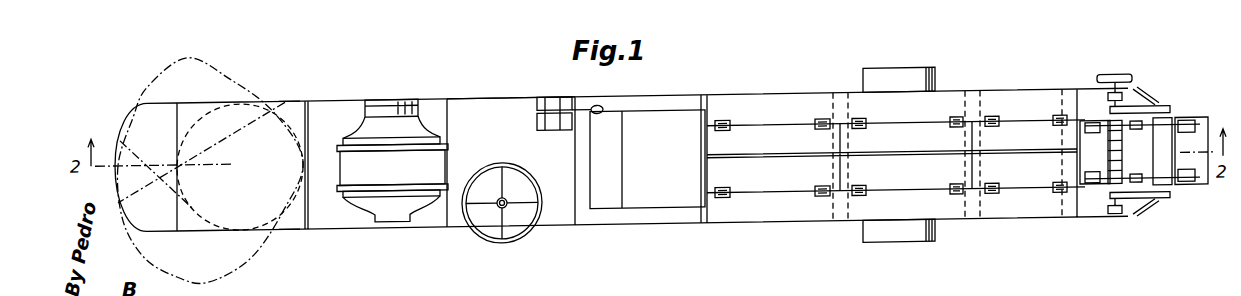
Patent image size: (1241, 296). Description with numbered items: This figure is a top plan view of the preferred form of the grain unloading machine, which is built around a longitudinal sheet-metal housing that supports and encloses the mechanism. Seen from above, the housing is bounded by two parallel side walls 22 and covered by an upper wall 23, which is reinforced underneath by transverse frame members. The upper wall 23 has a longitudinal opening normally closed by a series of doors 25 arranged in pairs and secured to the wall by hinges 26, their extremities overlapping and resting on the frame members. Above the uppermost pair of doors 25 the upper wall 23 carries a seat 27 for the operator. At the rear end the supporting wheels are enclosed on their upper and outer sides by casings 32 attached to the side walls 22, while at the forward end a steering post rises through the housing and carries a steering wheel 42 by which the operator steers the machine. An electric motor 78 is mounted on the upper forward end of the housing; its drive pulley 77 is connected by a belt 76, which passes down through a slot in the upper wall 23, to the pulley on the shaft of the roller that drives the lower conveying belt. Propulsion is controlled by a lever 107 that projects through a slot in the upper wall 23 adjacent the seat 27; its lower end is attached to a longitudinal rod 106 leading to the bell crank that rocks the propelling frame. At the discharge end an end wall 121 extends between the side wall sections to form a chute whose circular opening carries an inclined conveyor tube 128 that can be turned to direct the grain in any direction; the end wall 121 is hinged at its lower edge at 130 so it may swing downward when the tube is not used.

The side walls 22 is at (741, 103).
The upper wall 23 is at (497, 116).
The doors 25 is at (781, 190).
The hinges 26 is at (822, 208).
The seat 27 is at (655, 210).
The casings 32 is at (909, 255).
The steering wheel 42 is at (526, 238).
The belt 76 is at (414, 104).
The drive pulley 77 is at (400, 104).
The electric motor 78 is at (361, 180).
The rod 106 is at (591, 114).
The lever 107 is at (555, 110).
The end wall 121 is at (284, 112).
The inclined conveyor tube 128 is at (138, 128).
The hinge 130 is at (178, 103).